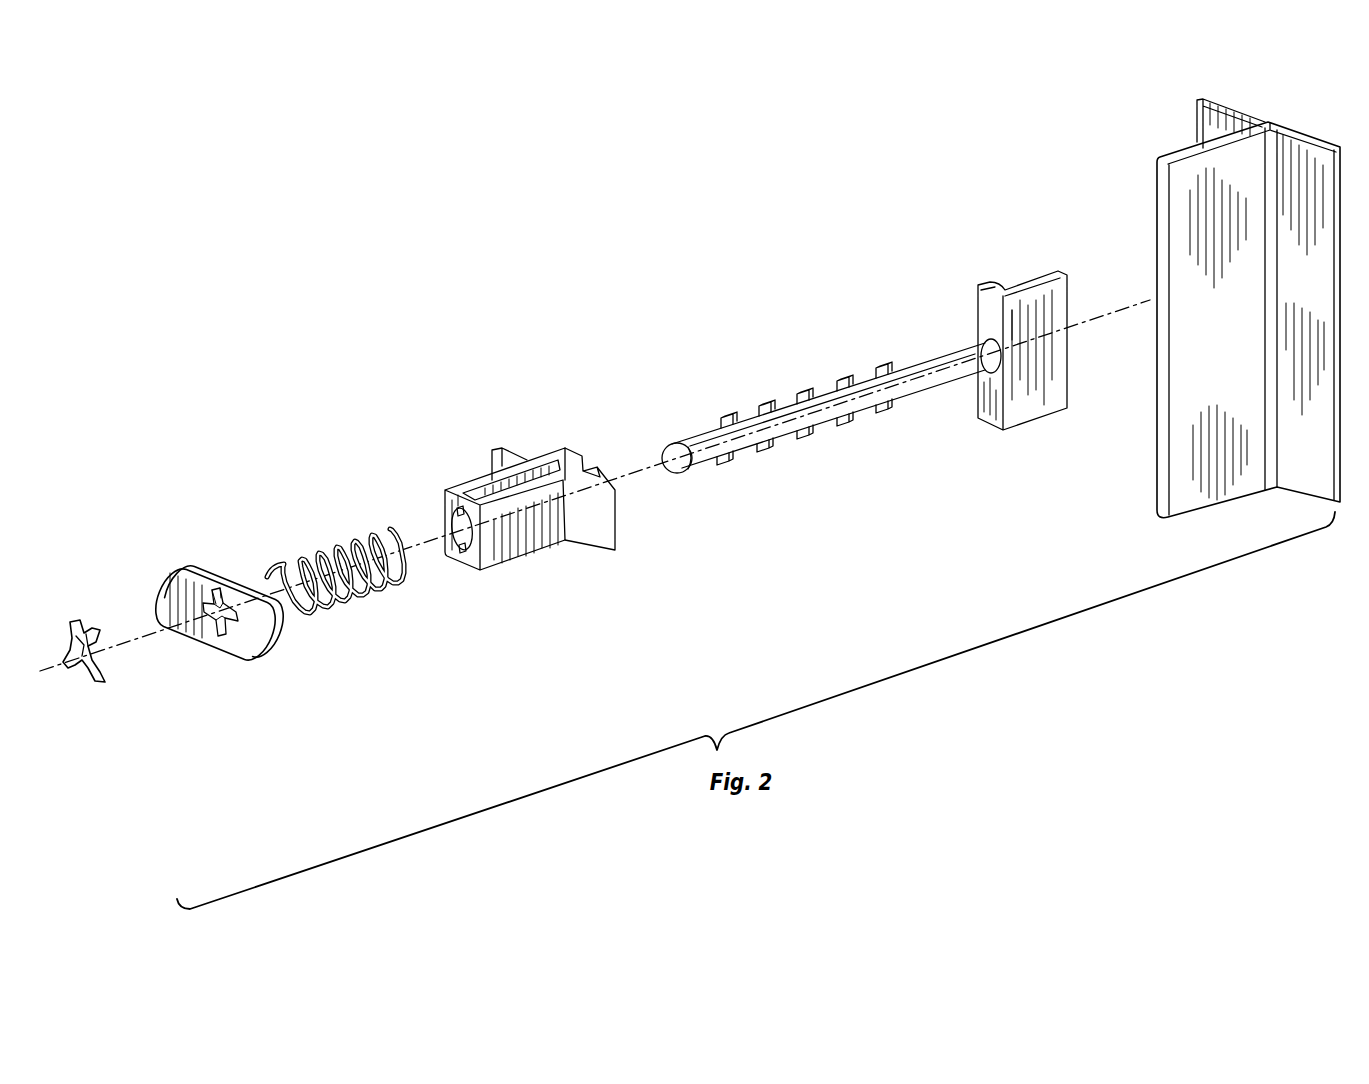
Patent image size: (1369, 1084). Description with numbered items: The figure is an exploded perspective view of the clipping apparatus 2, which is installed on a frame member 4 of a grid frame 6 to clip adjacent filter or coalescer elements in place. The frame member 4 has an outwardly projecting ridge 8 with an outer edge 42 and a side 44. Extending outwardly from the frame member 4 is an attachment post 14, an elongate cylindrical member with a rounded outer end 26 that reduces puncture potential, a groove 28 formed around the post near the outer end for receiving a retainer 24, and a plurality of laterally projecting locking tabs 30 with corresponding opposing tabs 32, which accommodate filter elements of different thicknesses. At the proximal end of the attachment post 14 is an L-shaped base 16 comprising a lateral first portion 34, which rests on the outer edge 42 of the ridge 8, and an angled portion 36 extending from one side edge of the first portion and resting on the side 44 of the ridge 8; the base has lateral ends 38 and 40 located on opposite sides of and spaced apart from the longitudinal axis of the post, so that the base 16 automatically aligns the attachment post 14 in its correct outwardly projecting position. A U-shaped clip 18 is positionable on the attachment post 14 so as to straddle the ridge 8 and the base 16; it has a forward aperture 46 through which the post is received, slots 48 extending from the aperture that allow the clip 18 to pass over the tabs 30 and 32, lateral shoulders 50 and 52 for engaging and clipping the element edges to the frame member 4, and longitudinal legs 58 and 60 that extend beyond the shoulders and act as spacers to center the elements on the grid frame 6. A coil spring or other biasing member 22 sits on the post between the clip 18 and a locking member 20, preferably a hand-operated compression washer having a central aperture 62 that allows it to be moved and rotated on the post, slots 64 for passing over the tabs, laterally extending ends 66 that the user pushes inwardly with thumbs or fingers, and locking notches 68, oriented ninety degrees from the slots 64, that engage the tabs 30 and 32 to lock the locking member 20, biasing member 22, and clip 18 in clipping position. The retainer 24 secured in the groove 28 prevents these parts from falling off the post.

The clipping apparatus 2 is at (413, 353).
The frame member 4 is at (1152, 183).
The grid frame 6 is at (1213, 330).
The projecting ridge 8 is at (1157, 487).
The attachment post 14 is at (903, 362).
The base 16 is at (1031, 280).
The clip 18 is at (485, 477).
The locking member 20 is at (258, 657).
The biasing member 22 is at (330, 545).
The retainer 24 is at (100, 685).
The rounded outer end 26 is at (670, 455).
The groove 28 is at (705, 467).
The locking tab 30 is at (777, 452).
The laterally projecting tabs 32 is at (765, 406).
The lateral first portion 34 is at (985, 316).
The angled portion 36 is at (1040, 385).
The lateral end 38 is at (1008, 288).
The lateral end 40 is at (1015, 428).
The outer edge 42 is at (1165, 423).
The side 44 is at (1203, 493).
The aperture 46 is at (450, 525).
The slots 48 is at (458, 510).
The lateral shoulder 50 is at (507, 452).
The lateral shoulder 52 is at (618, 553).
The longitudinal leg 58 is at (565, 452).
The longitudinal leg 60 is at (602, 476).
The central aperture 62 is at (221, 603).
The slots 64 is at (212, 587).
The laterally extending ends 66 is at (172, 583).
The locking notches 68 is at (205, 605).